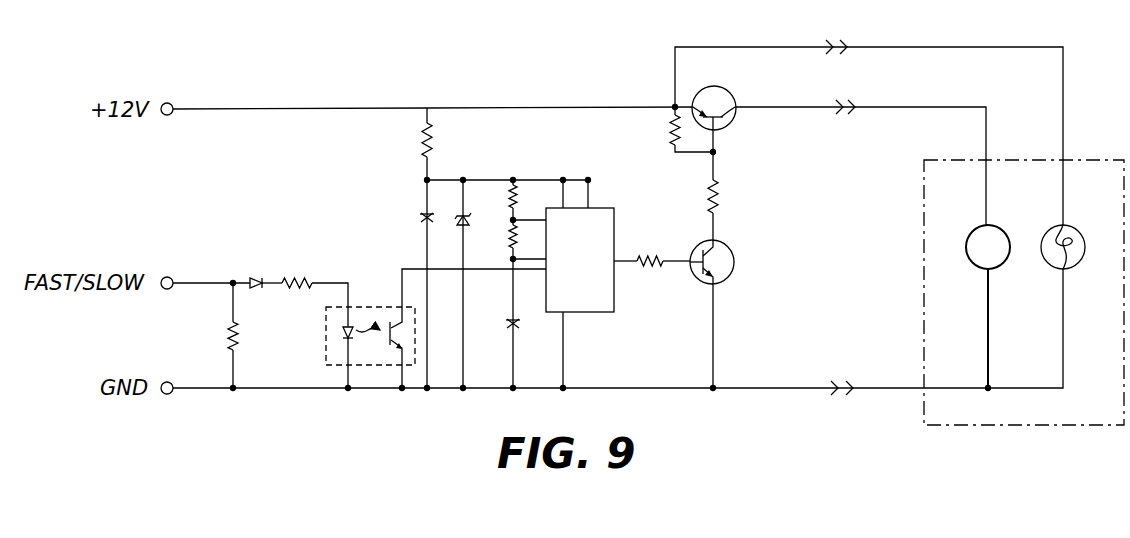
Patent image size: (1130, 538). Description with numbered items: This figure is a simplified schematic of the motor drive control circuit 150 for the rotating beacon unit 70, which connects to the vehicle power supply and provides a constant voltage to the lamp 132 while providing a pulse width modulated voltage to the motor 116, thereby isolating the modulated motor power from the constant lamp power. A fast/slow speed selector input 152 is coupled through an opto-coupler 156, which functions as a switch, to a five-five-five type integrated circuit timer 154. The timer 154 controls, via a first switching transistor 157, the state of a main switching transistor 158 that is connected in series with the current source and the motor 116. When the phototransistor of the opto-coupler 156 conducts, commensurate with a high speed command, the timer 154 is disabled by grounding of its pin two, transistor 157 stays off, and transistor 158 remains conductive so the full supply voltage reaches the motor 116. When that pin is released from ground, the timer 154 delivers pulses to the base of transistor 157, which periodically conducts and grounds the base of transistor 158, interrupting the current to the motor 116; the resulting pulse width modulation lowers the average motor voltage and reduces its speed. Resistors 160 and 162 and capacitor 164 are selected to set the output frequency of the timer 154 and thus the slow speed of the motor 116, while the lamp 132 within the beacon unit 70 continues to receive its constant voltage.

The motor drive control circuit 150 is at (514, 68).
The fast/slow input terminal 152 is at (169, 276).
The integrated circuit timer 154 is at (580, 260).
The opto-coupler 156 is at (372, 307).
The first switching transistor 157 is at (760, 240).
The main switching transistor 158 is at (710, 86).
The resistor 160 is at (510, 242).
The resistor 162 is at (506, 193).
The capacitor 164 is at (511, 318).
The rotating beacon unit 70 is at (1043, 425).
The motor 116 is at (991, 268).
The lamp 132 is at (1085, 259).